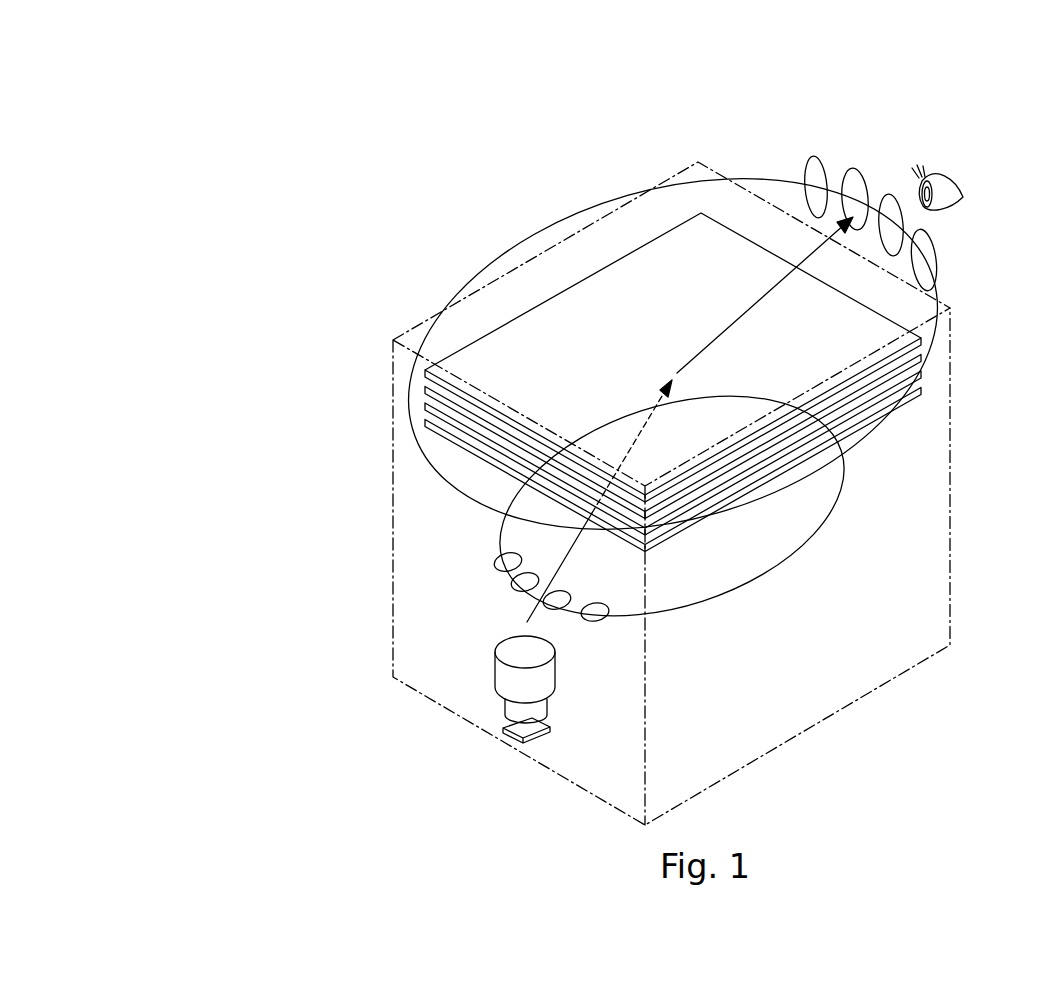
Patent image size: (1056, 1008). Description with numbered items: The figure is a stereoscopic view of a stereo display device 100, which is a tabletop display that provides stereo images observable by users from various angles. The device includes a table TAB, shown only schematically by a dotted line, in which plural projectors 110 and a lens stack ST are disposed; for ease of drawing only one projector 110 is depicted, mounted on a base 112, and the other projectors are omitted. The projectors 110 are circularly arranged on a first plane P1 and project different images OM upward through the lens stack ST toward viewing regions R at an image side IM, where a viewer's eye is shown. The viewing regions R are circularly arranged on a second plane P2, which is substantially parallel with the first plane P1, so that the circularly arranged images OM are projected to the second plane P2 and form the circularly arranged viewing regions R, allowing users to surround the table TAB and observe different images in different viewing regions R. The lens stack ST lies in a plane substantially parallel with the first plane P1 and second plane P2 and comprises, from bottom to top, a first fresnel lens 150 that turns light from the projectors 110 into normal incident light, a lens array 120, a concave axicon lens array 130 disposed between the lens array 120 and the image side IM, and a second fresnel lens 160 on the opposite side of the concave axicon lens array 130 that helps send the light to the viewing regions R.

The stereo display device 100 is at (230, 370).
The projector 110 is at (500, 673).
The substrate of light source 112 is at (503, 728).
The lens array 120 is at (425, 404).
The concave axicon lens array 130 is at (425, 388).
The first fresnel lens 150 is at (425, 421).
The second fresnel lens 160 is at (425, 371).
The lens stack ST is at (293, 332).
The table TAB is at (395, 588).
The images OM is at (497, 558).
The first plane P1 is at (706, 600).
The second plane P2 is at (927, 320).
The viewing region R is at (815, 157).
The image side IM is at (652, 72).